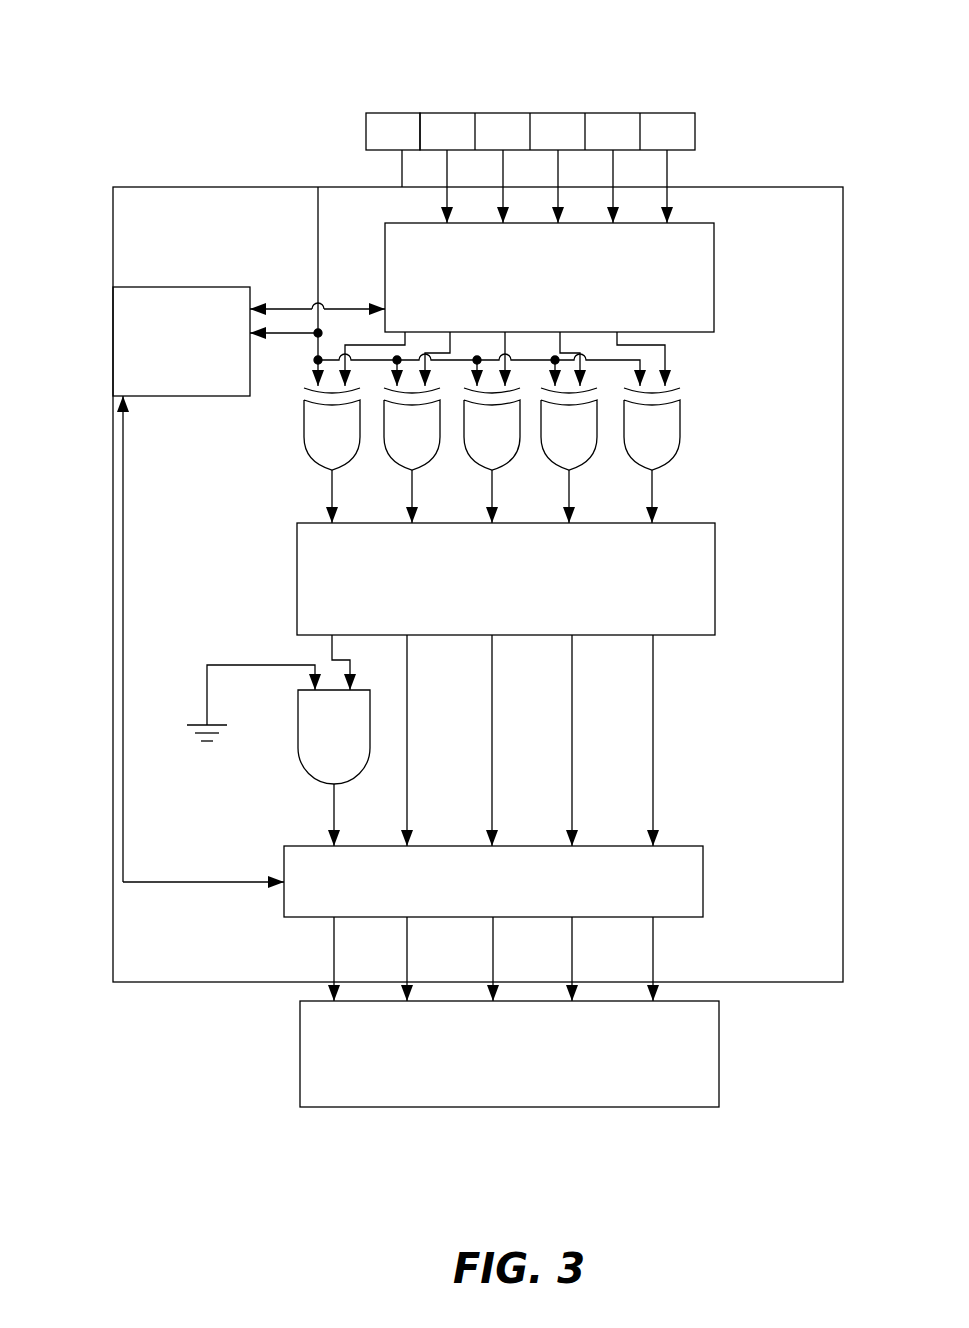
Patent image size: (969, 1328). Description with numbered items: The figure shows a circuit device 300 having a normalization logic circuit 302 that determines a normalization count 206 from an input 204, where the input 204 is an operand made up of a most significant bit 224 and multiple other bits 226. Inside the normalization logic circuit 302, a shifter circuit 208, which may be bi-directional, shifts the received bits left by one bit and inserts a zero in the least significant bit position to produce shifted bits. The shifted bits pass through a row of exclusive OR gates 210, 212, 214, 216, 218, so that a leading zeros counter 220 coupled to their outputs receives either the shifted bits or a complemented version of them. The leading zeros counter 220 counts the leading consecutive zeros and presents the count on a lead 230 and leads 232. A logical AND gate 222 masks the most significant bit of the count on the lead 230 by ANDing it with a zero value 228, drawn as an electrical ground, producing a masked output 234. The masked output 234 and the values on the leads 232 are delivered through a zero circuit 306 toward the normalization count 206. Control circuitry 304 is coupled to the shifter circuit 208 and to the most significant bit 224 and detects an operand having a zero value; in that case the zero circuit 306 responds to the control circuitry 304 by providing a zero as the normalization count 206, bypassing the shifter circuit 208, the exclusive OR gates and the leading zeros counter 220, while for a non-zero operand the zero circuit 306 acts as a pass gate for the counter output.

The circuit device 300 is at (131, 16).
The normalization logic circuit 302 is at (213, 187).
The control circuitry 304 is at (215, 287).
The input 204 is at (750, 127).
The most significant bit 224 is at (390, 112).
The other bits 226 is at (693, 110).
The shifter circuit 208 is at (714, 272).
The exclusive OR gate 210 is at (304, 437).
The exclusive OR gate 212 is at (398, 463).
The exclusive OR gate 214 is at (483, 465).
The exclusive OR gate 216 is at (558, 463).
The exclusive OR gate 218 is at (643, 463).
The leading zeros counter 220 is at (297, 580).
The logical AND gate 222 is at (298, 735).
The zero value 228 is at (207, 700).
The lead 230 is at (332, 655).
The leads 232 is at (728, 716).
The masked output 234 is at (330, 818).
The zero circuit 306 is at (703, 893).
The normalization count 206 is at (300, 1065).